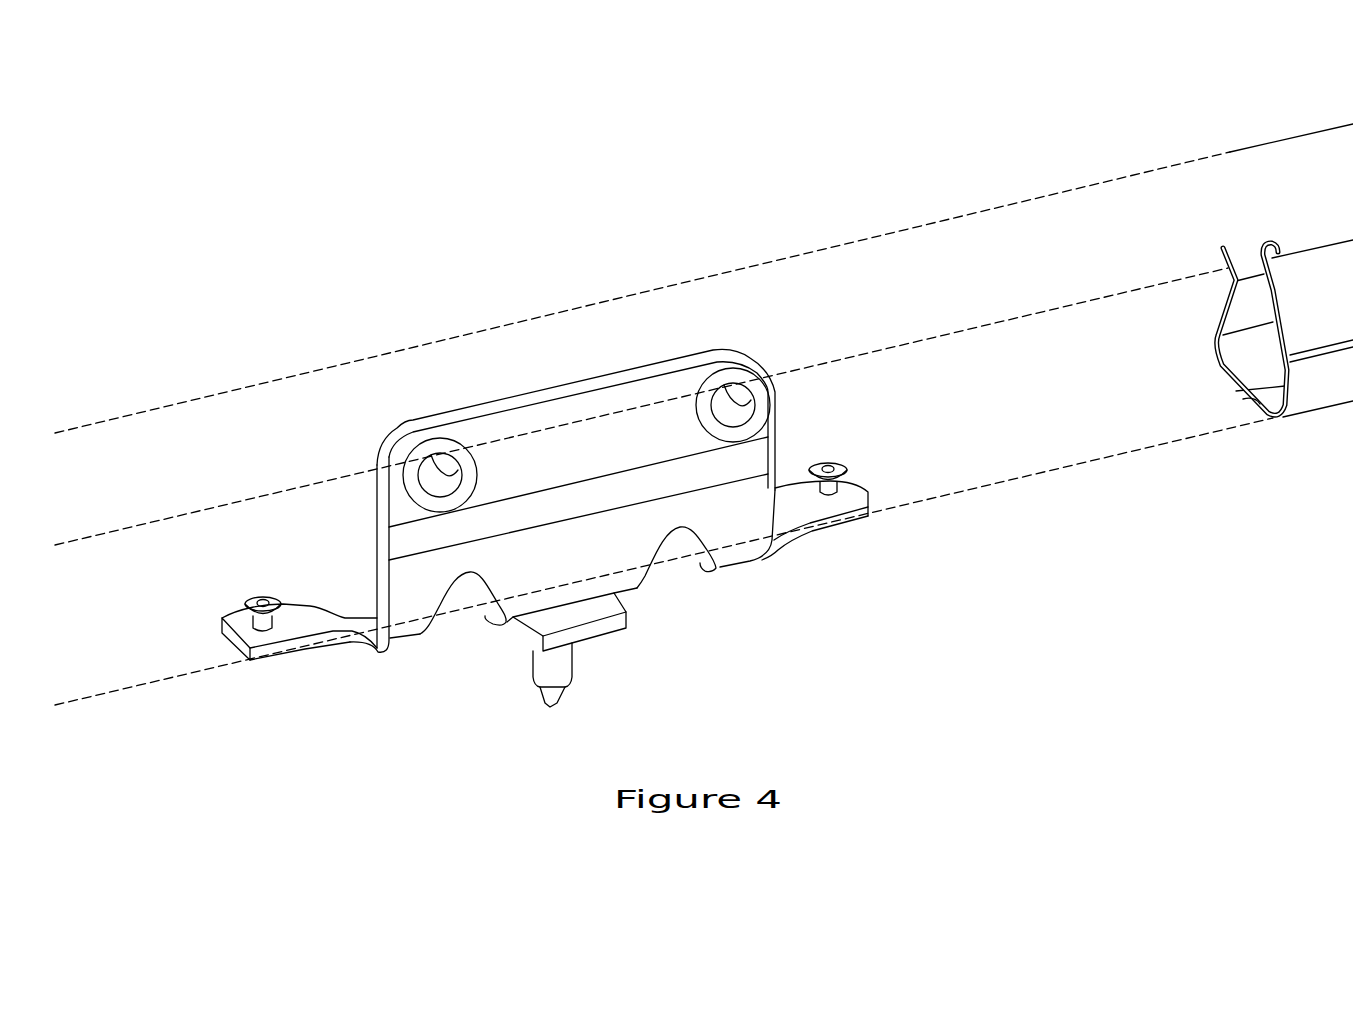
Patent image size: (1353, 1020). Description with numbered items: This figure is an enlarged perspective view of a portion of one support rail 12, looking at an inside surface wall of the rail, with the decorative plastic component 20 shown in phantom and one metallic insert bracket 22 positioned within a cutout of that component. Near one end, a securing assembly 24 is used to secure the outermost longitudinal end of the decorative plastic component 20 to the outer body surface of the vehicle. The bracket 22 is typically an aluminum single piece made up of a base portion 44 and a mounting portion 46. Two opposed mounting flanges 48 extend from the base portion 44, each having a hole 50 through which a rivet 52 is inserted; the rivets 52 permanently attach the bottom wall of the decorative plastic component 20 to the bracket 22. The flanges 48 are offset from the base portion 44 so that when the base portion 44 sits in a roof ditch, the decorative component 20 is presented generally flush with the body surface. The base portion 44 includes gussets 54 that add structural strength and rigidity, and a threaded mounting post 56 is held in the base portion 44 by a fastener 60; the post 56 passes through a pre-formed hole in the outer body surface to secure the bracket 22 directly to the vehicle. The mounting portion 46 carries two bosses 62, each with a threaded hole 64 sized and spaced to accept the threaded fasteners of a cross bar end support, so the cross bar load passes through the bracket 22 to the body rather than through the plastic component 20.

The support rail 12 is at (293, 290).
The decorative plastic component 20 is at (238, 386).
The metallic insert bracket 22 is at (544, 526).
The securing assembly 24 is at (1240, 397).
The base portion 44 is at (573, 494).
The mounting portion 46 is at (560, 410).
The mounting flange 48 is at (303, 655).
The hole 50 is at (253, 626).
The rivet 52 is at (260, 598).
The gusset 54 is at (487, 612).
The threaded mounting post 56 is at (560, 695).
The fastener 60 is at (588, 635).
The boss 62 is at (707, 382).
The threaded hole 64 is at (445, 475).